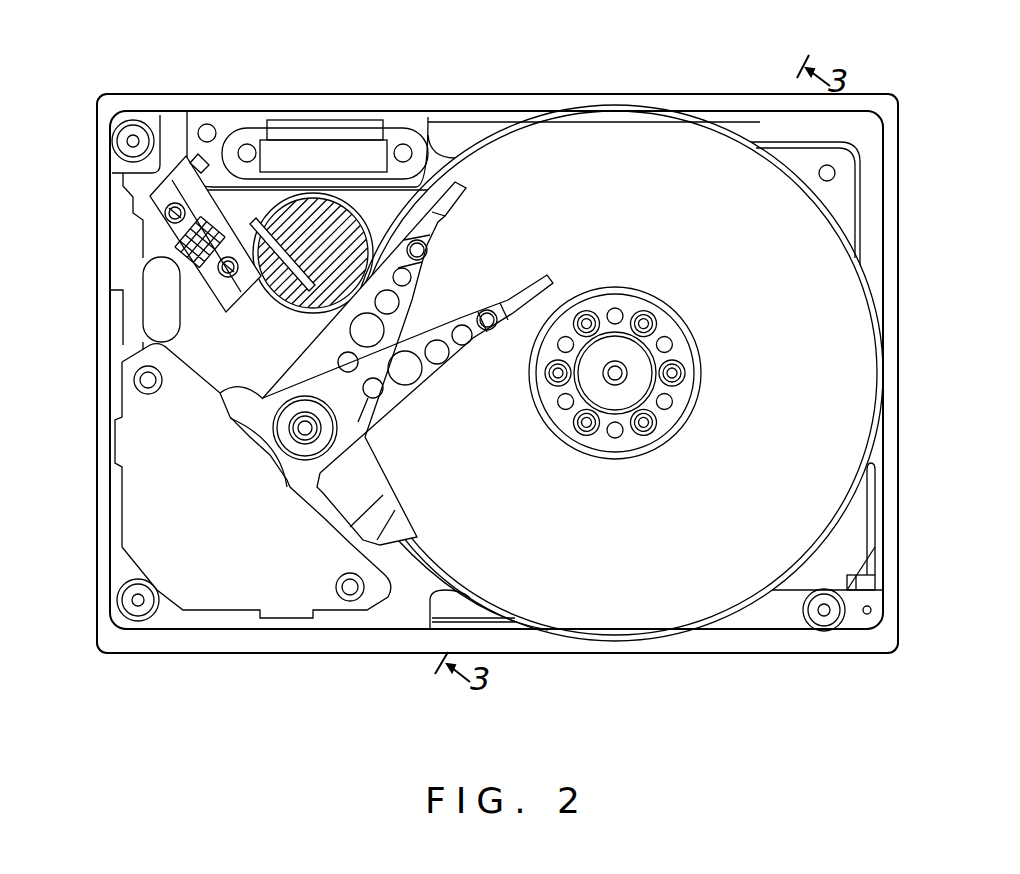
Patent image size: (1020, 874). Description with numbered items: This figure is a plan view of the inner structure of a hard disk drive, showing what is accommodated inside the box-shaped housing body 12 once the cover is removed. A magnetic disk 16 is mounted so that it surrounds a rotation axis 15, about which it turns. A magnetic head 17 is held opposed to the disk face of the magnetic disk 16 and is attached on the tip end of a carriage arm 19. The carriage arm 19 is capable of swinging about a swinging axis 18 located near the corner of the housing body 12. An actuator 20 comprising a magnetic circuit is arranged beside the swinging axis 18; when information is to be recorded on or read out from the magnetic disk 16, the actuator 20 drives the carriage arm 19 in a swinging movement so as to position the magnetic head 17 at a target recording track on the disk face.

The housing body 12 is at (652, 97).
The rotation axis 15 is at (650, 392).
The magnetic disk 16 is at (690, 237).
The magnetic head 17 is at (542, 280).
The swinging axis 18 is at (298, 413).
The carriage arm 19 is at (447, 370).
The actuator 20 is at (230, 514).